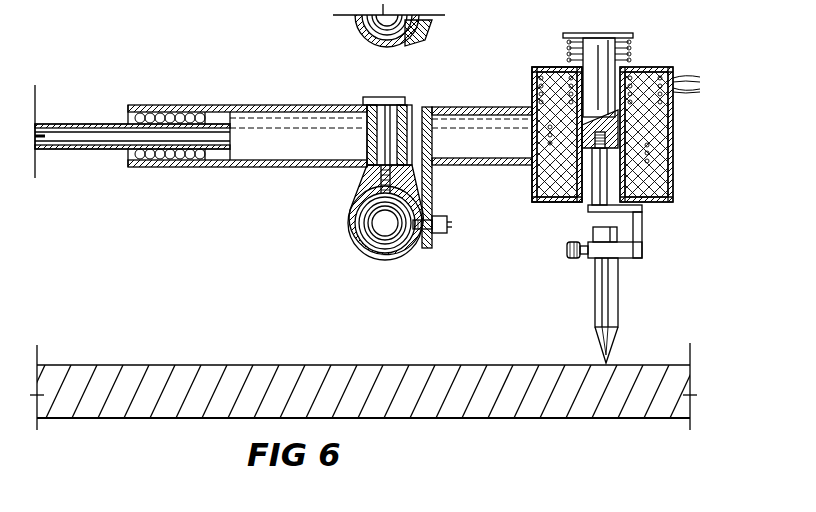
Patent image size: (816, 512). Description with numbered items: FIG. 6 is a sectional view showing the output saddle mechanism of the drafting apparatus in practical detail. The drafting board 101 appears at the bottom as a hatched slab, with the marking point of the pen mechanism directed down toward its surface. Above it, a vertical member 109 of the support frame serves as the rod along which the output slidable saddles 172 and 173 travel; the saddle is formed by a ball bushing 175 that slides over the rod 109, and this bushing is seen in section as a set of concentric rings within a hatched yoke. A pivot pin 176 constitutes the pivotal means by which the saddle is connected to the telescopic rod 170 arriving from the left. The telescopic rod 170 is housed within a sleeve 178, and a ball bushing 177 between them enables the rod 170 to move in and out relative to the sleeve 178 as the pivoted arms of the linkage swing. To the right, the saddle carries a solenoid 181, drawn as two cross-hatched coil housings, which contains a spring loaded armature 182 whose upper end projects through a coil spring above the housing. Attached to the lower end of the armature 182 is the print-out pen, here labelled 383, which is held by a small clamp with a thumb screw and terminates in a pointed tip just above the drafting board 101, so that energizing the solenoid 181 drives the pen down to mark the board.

The drafting board 101 is at (318, 365).
The vertical member 109 is at (406, 255).
The telescopic rod 170 is at (90, 123).
The output slidable saddle 172 is at (412, 30).
The output slidable saddle 173 is at (365, 251).
The ball bushing 175 is at (357, 222).
The pivot pin 176 is at (390, 97).
The ball bushing 177 is at (175, 158).
The sleeve 178 is at (267, 110).
The solenoid 181 is at (537, 190).
The spring loaded armature 182 is at (628, 52).
The stylus 383 is at (602, 302).